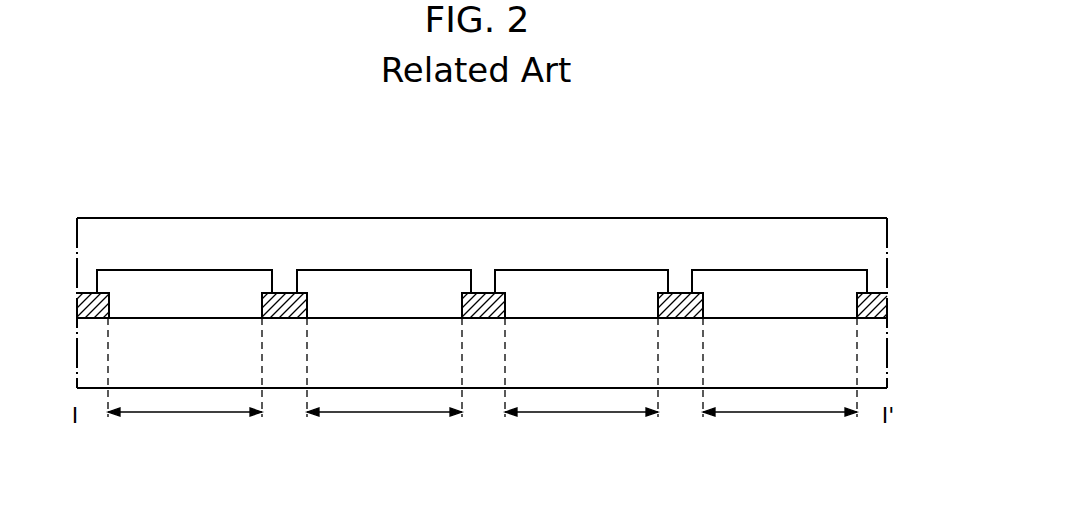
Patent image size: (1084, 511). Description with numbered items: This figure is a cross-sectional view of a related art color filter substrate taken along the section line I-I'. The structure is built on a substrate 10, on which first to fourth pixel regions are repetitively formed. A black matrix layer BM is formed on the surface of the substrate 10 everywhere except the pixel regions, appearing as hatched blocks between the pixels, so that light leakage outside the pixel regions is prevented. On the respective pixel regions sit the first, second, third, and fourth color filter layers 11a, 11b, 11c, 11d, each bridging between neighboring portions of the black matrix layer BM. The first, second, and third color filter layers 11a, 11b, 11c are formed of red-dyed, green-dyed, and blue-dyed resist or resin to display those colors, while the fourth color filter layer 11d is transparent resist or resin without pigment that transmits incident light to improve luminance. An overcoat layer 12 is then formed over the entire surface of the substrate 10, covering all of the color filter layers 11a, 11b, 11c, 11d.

The substrate 10 is at (877, 358).
The overcoat layer 12 is at (878, 242).
The black matrix layer BM is at (887, 305).
The first color filter layer 11a is at (188, 273).
The second color filter layer 11b is at (387, 273).
The third color filter layer 11c is at (583, 273).
The fourth color filter layer 11d is at (783, 273).